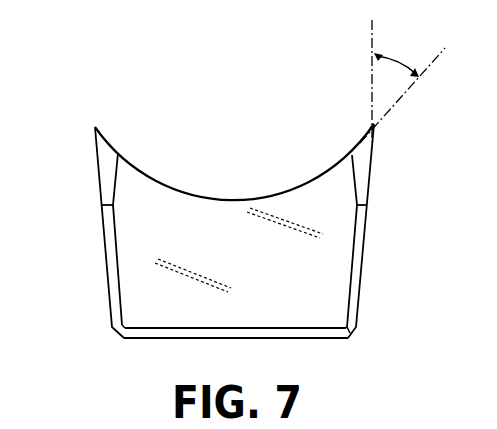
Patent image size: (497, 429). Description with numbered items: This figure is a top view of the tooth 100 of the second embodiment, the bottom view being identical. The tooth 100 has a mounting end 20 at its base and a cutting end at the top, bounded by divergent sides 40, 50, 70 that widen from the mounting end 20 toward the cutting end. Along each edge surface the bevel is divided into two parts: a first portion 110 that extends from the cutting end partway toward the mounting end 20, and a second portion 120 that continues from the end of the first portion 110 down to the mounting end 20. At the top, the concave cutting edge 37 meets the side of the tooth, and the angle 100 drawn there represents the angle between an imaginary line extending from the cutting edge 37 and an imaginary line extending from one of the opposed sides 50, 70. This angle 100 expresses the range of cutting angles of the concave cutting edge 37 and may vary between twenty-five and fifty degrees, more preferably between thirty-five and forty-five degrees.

The mounting end 20 is at (190, 340).
The cutting edge 37 is at (358, 143).
The divergent side 40 is at (302, 255).
The divergent side 50 is at (360, 278).
The divergent side 70 is at (108, 282).
The tooth 100 is at (402, 81).
The first portion 110 is at (102, 168).
The second portion 120 is at (108, 248).